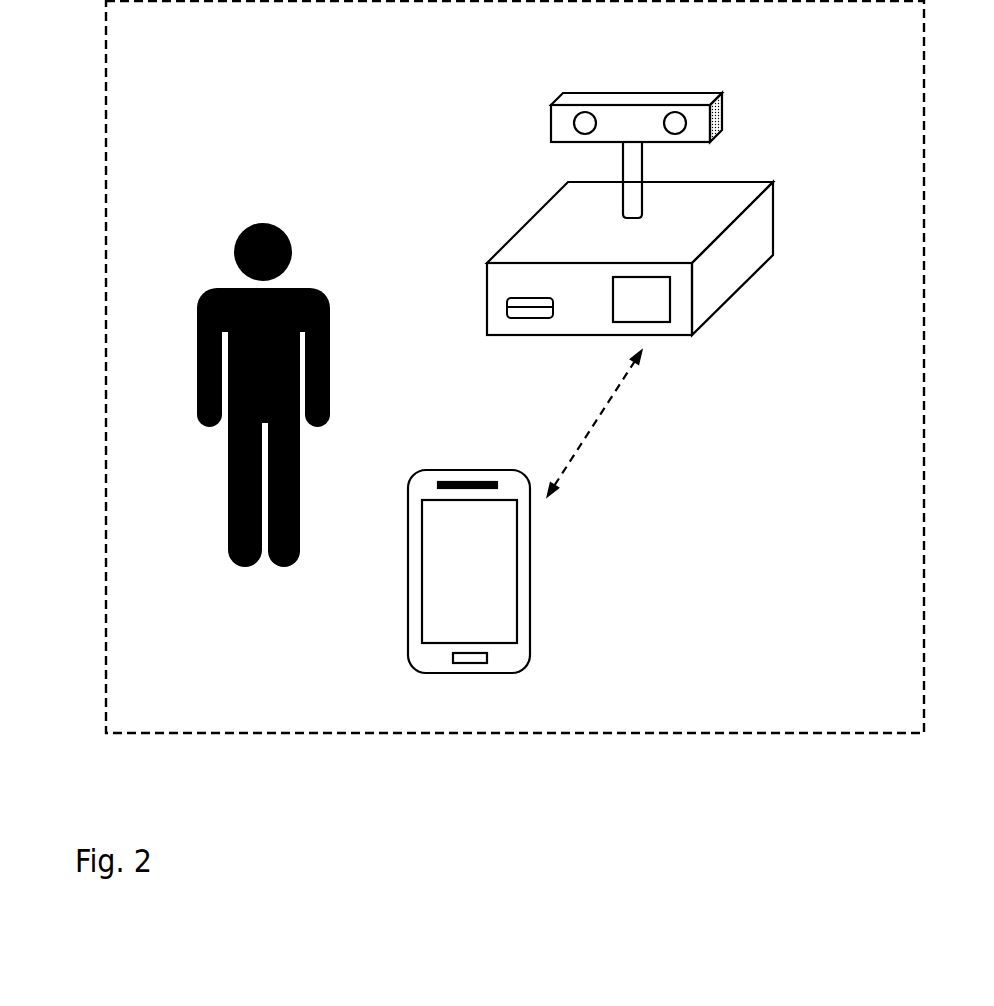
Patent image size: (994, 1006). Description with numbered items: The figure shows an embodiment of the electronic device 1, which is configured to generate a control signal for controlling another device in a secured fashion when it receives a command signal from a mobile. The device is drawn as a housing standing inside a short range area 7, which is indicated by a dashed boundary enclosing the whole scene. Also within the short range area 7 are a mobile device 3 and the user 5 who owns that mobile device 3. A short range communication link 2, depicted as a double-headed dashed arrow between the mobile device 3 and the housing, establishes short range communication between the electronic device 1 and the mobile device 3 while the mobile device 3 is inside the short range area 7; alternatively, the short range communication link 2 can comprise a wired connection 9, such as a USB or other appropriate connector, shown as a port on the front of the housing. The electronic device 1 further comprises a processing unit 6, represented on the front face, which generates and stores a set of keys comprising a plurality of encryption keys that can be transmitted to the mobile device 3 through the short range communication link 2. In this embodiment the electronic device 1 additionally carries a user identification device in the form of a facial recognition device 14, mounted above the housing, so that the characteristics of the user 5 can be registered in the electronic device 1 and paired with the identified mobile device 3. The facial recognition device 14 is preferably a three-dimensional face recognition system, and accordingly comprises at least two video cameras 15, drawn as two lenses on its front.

The electronic device 1 is at (759, 208).
The short range communication link 2 is at (594, 423).
The mobile device 3 is at (420, 650).
The user 5 is at (205, 303).
The processing unit 6 is at (641, 299).
The short range area 7 is at (106, 540).
The wired connection 9 is at (507, 302).
The facial recognition device 14 is at (722, 112).
The video cameras 15 is at (675, 123).